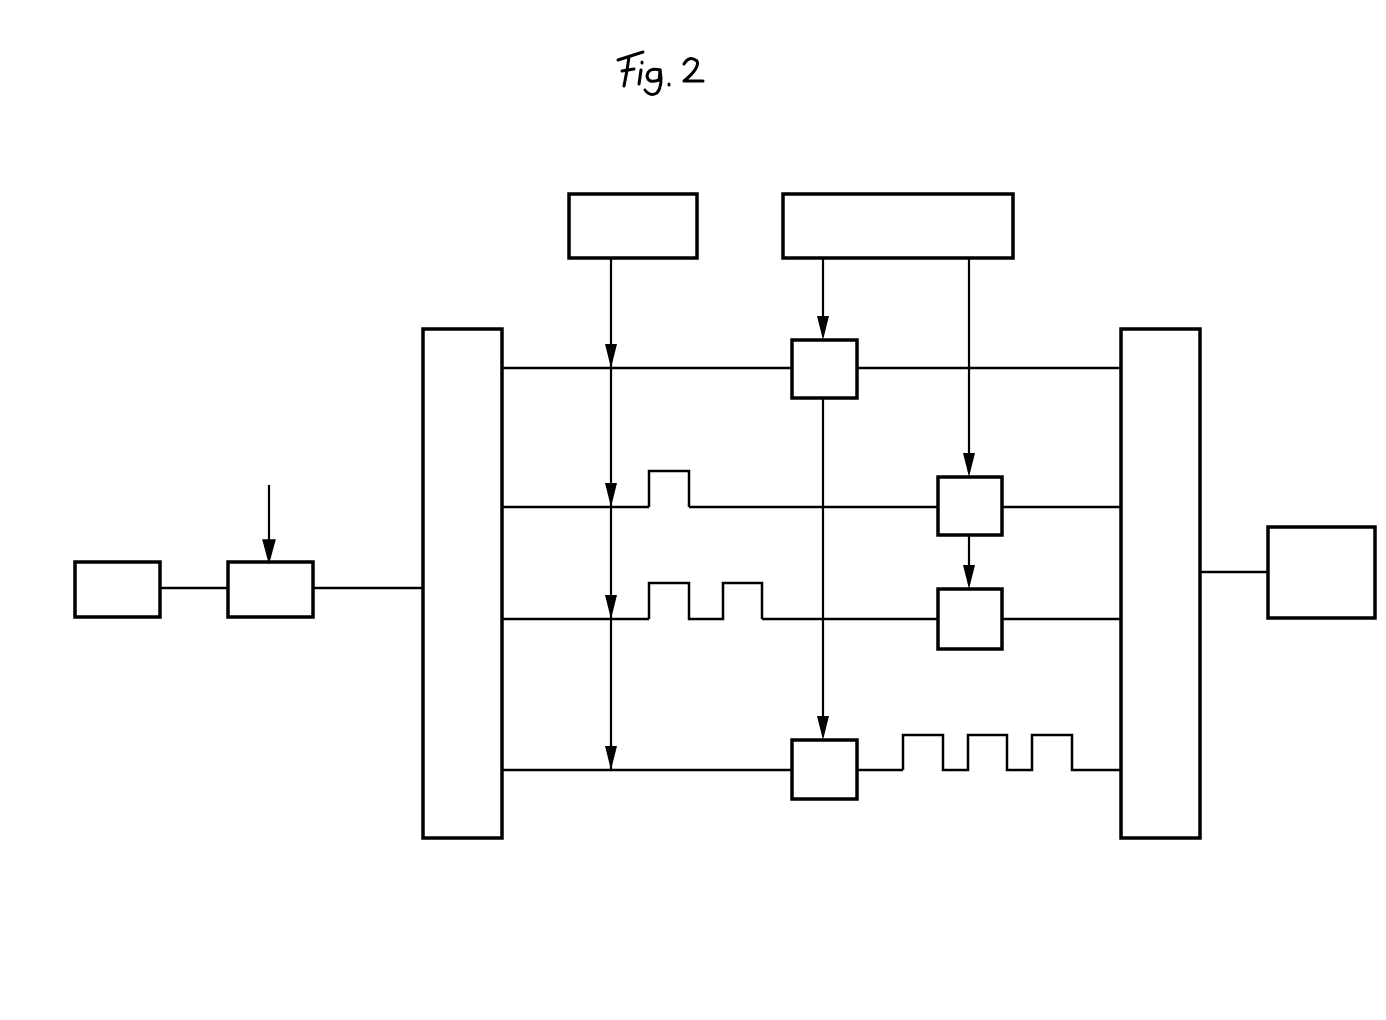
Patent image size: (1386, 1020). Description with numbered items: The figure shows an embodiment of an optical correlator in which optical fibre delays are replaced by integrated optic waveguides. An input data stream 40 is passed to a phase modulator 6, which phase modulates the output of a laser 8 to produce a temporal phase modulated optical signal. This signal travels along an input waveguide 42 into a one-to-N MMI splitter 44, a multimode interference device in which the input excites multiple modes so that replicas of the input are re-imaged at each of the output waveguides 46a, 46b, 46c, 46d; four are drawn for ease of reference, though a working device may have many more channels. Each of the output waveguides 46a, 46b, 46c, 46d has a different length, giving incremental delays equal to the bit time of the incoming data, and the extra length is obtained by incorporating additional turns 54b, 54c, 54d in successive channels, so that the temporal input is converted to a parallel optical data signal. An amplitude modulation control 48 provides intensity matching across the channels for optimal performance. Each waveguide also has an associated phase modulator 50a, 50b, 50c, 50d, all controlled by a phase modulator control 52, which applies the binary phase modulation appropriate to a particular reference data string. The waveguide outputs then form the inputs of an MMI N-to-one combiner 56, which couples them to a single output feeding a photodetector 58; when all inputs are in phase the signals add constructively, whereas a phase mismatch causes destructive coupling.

The laser 8 is at (118, 572).
The phase modulator 6 is at (273, 600).
The input data stream 40 is at (268, 503).
The input waveguide 42 is at (383, 588).
The 1-N MMI splitter 44 is at (463, 817).
The output waveguide 46a is at (638, 368).
The output waveguide 46b is at (553, 505).
The output waveguide 46c is at (555, 618).
The output waveguide 46d is at (558, 768).
The amplitude modulation control 48 is at (612, 212).
The phase modulator 50a is at (833, 355).
The phase modulator 50b is at (987, 502).
The phase modulator 50c is at (985, 612).
The phase modulator 50d is at (826, 775).
The phase modulator control 52 is at (900, 210).
The additional turns 54b is at (718, 482).
The additional turns 54c is at (706, 563).
The additional turns 54d is at (992, 712).
The MMI N-1 combiner 56 is at (1165, 348).
The photodetector 58 is at (1332, 545).